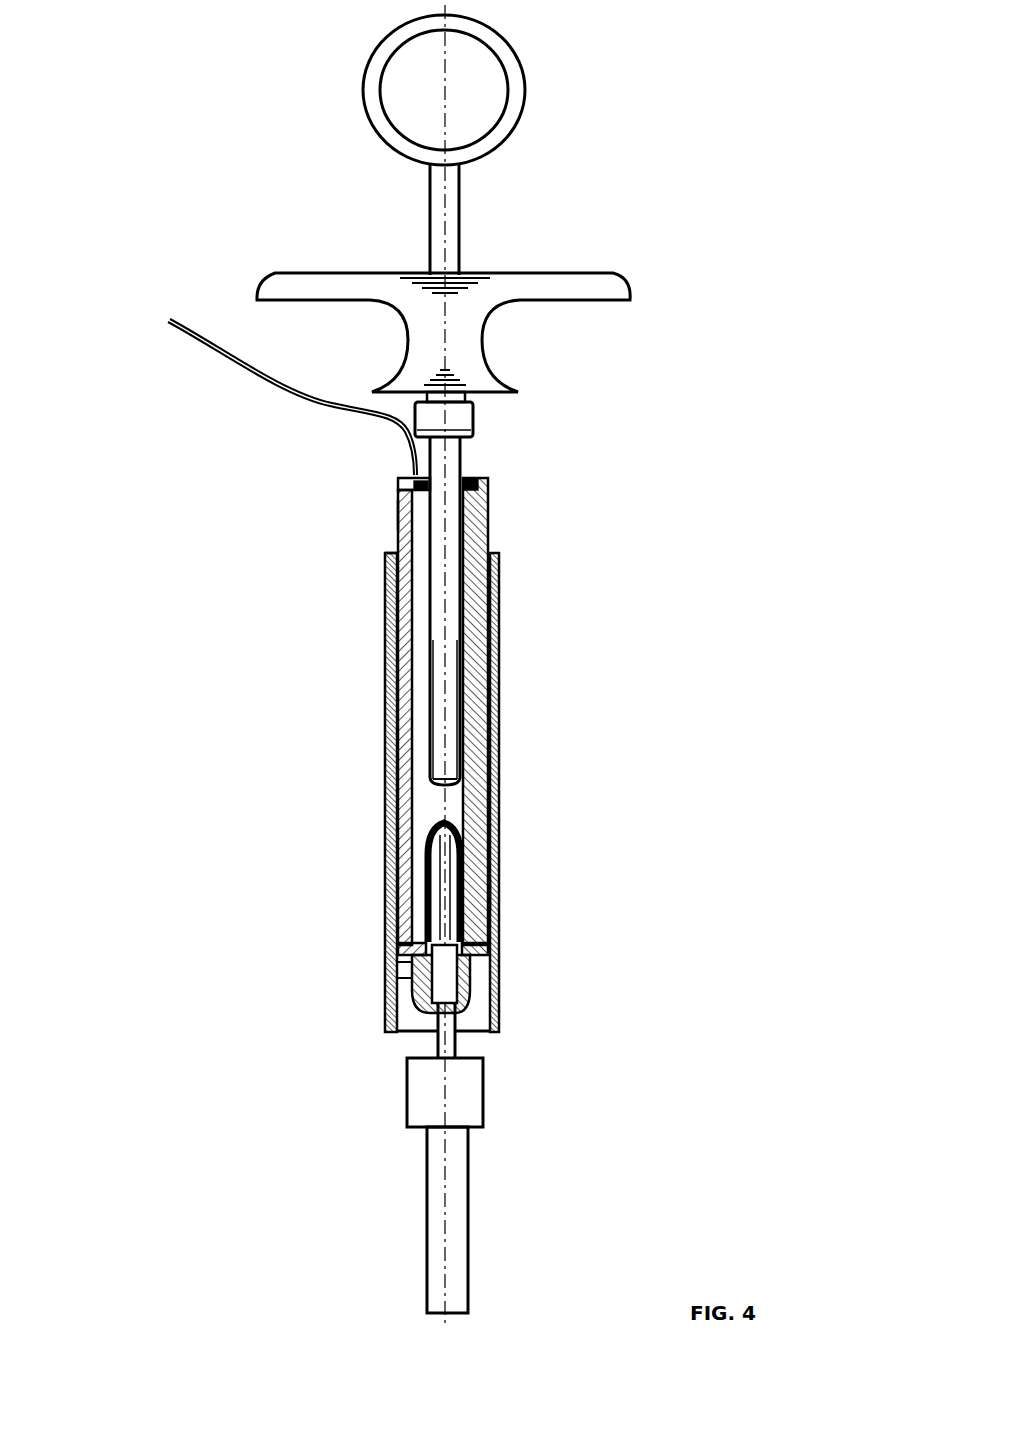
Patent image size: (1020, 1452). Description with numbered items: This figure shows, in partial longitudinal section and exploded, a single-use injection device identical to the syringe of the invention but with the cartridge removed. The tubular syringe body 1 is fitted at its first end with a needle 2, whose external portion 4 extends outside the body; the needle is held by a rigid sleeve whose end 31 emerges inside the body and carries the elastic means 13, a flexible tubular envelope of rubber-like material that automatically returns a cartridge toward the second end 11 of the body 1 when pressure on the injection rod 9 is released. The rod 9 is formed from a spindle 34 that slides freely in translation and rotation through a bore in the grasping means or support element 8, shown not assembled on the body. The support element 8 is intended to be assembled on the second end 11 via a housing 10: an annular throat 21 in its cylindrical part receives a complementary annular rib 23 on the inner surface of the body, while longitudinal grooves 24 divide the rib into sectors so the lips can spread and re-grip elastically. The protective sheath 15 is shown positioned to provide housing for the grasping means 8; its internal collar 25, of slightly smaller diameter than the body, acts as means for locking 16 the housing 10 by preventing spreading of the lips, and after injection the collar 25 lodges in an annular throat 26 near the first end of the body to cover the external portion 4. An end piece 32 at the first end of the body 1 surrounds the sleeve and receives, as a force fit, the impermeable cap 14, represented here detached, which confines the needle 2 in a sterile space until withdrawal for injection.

The syringe body 1 is at (488, 512).
The needle 2 is at (457, 1045).
The external portion of the needle 4 is at (437, 1045).
The support element 8 is at (622, 290).
The injection rod 9 is at (525, 118).
The housing 10 is at (279, 398).
The second end of the body 11 is at (488, 478).
The elastic means 13 is at (499, 805).
The cap 14 is at (483, 1100).
The protective sheath 15 is at (499, 988).
The means for locking 16 is at (498, 552).
The annular throat 21 is at (520, 397).
The annular rib 23 is at (426, 478).
The grooves 24 is at (400, 516).
The internal collar 25 is at (397, 553).
The annular throat 26 is at (499, 894).
The end of the sleeve 31 is at (386, 962).
The end piece 32 is at (387, 975).
The spindle 34 is at (452, 658).